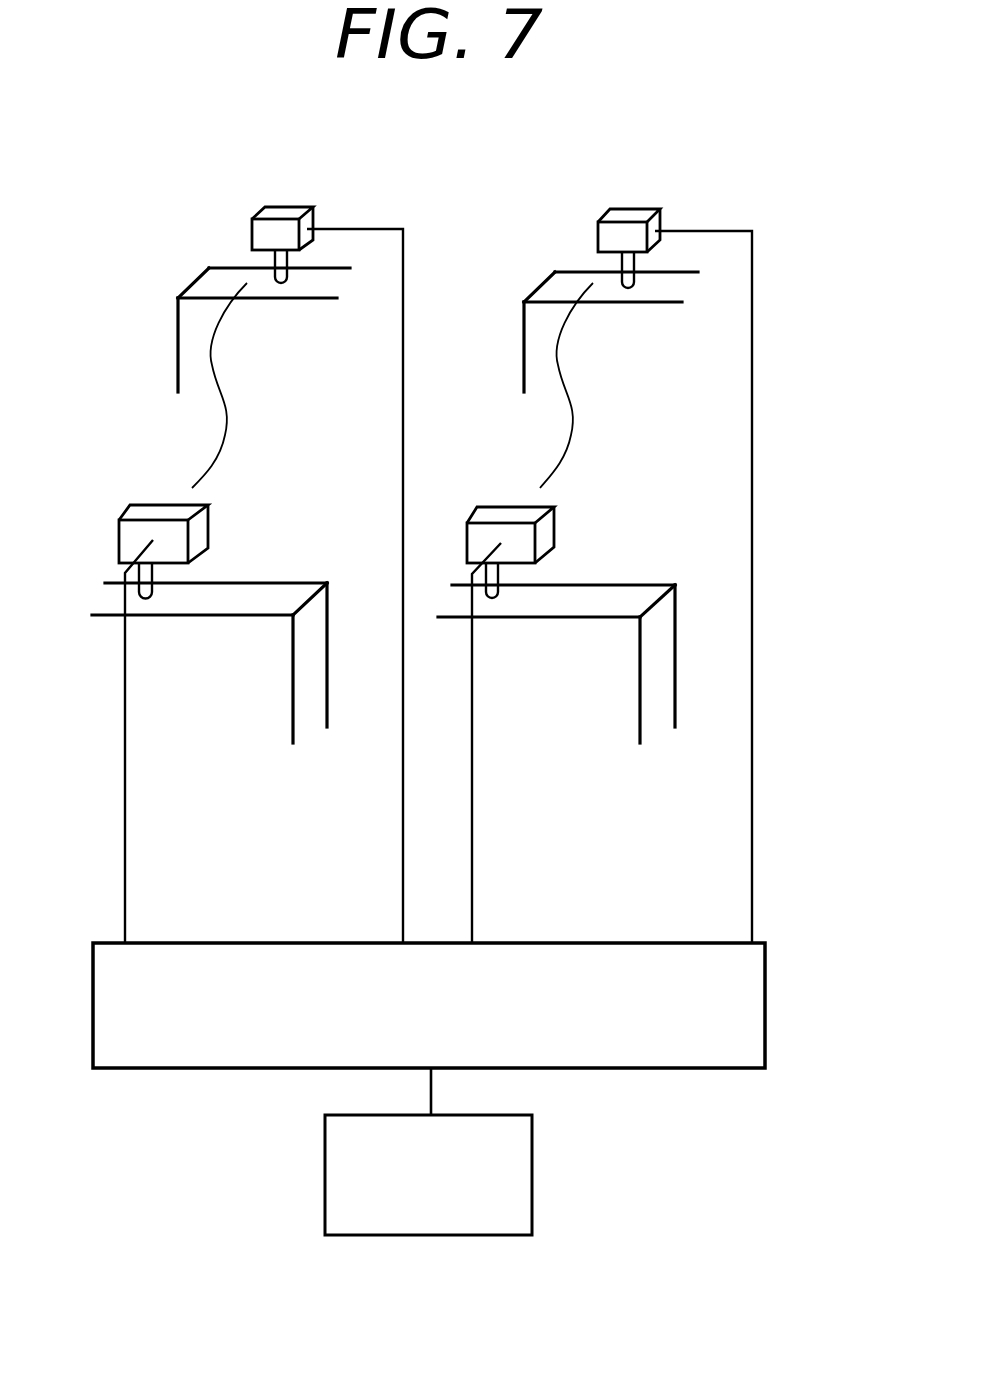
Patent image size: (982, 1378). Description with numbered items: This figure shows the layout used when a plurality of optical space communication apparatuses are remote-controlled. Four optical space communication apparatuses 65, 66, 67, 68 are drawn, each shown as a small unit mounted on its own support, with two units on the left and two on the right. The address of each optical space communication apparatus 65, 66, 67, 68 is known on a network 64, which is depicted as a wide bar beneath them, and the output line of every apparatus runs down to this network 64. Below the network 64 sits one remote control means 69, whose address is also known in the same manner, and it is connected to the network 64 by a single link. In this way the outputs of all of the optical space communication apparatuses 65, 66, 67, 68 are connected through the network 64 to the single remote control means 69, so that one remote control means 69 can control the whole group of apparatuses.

The network 64 is at (765, 970).
The optical space communication apparatus 65 is at (145, 508).
The optical space communication apparatus 66 is at (290, 211).
The optical space communication apparatus 67 is at (492, 510).
The optical space communication apparatus 68 is at (636, 215).
The remote control means 69 is at (532, 1142).